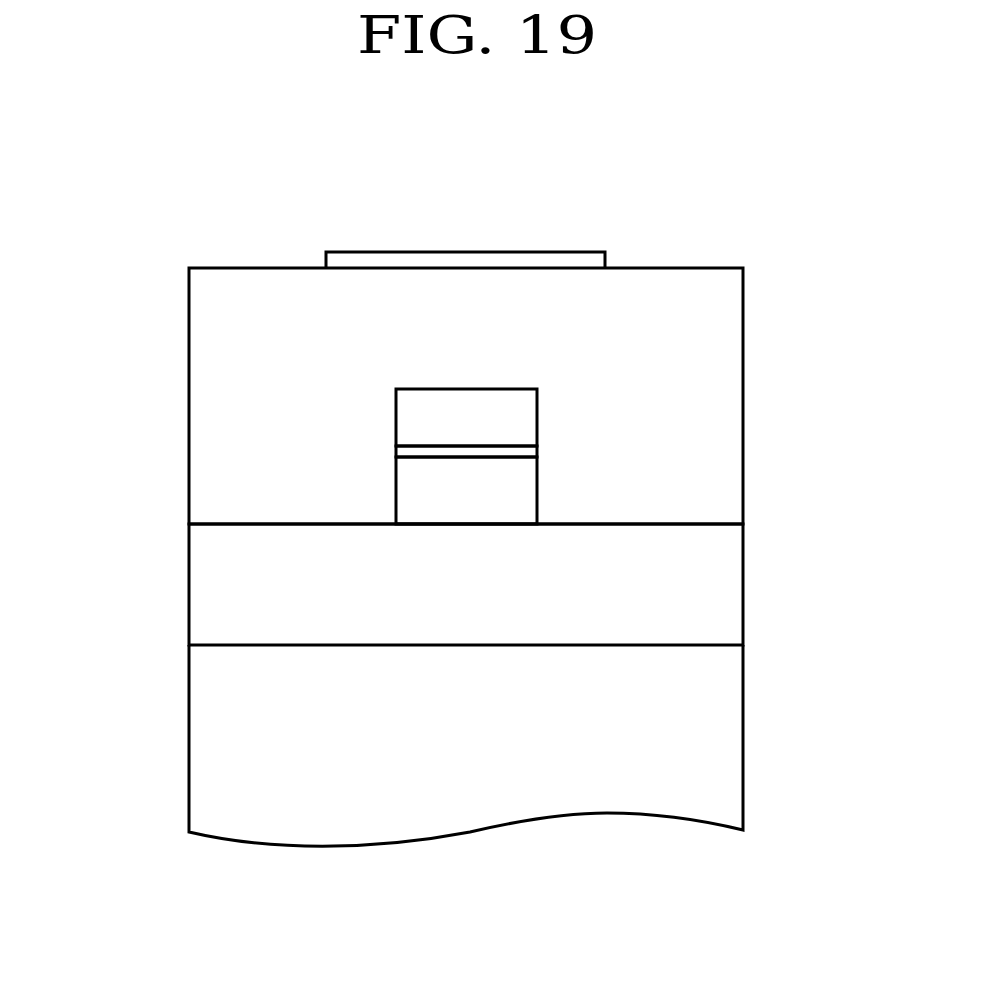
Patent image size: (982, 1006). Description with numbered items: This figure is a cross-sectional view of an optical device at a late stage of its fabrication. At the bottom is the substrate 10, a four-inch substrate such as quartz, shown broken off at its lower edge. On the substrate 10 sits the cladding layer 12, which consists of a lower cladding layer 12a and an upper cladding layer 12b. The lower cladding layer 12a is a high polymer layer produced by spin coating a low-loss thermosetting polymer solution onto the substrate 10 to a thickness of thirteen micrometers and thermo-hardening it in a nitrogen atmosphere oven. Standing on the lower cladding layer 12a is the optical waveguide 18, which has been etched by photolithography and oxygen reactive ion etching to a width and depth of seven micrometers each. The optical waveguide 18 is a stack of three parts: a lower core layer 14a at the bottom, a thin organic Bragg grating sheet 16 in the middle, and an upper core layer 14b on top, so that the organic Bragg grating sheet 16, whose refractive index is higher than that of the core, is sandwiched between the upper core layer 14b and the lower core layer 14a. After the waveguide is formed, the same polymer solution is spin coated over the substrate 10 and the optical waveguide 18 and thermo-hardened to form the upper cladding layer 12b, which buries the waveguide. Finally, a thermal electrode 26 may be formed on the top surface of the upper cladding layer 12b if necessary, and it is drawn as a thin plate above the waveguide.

The substrate 10 is at (737, 734).
The cladding layer 12 is at (385, 456).
The lower cladding layer 12a is at (205, 597).
The upper cladding layer 12b is at (420, 396).
The lower core layer 14a is at (527, 494).
The upper core layer 14b is at (527, 421).
The organic Bragg grating sheet 16 is at (527, 452).
The optical waveguide 18 is at (650, 452).
The thermal electrode 26 is at (466, 258).